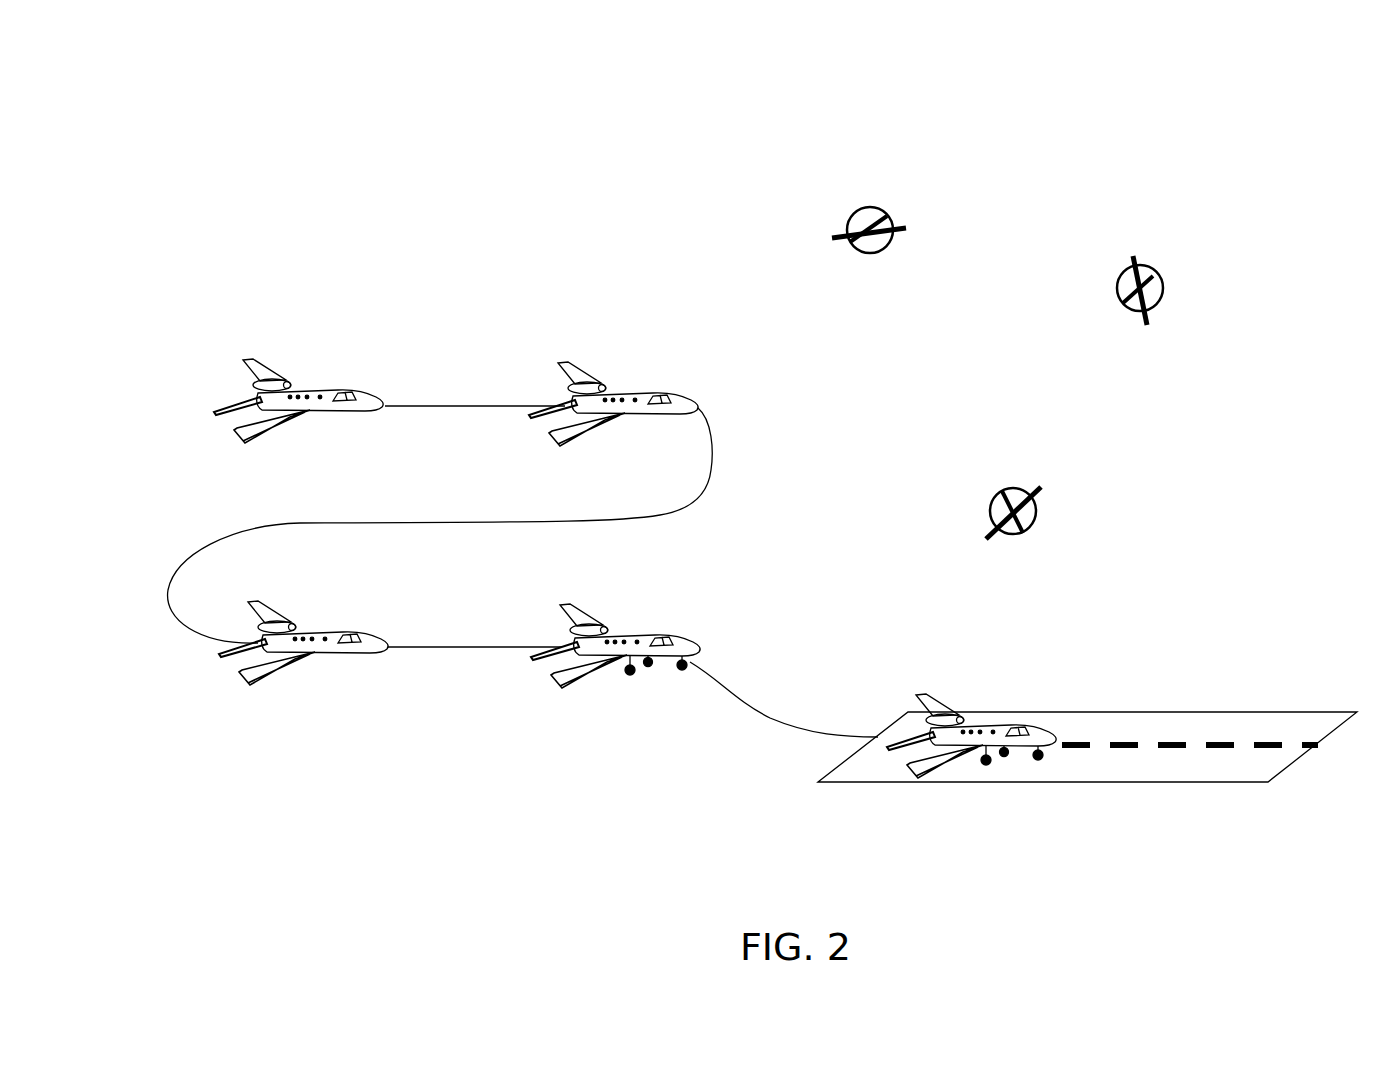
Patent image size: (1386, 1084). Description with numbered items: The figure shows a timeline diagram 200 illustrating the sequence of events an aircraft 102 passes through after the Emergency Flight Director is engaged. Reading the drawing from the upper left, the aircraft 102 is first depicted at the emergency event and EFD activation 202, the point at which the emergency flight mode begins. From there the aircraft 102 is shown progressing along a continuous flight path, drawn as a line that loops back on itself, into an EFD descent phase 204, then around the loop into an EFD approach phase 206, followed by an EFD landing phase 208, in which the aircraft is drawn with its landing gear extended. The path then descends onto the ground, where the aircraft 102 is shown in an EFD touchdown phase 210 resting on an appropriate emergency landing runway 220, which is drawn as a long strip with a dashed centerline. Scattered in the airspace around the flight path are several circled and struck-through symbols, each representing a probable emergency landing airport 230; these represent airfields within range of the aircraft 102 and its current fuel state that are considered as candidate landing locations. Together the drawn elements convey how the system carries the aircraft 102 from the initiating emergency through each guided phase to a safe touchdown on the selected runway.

The timeline diagram 200 is at (155, 122).
The aircraft 102 is at (380, 400).
The emergency event/EFD activation 202 is at (298, 352).
The EFD descent phase 204 is at (640, 368).
The EFD approach phase 206 is at (318, 608).
The EFD landing phase 208 is at (636, 612).
The EFD touchdown phase 210 is at (978, 690).
The appropriate emergency landing runway 220 is at (1208, 718).
The probable emergency landing airport 230 is at (853, 210).